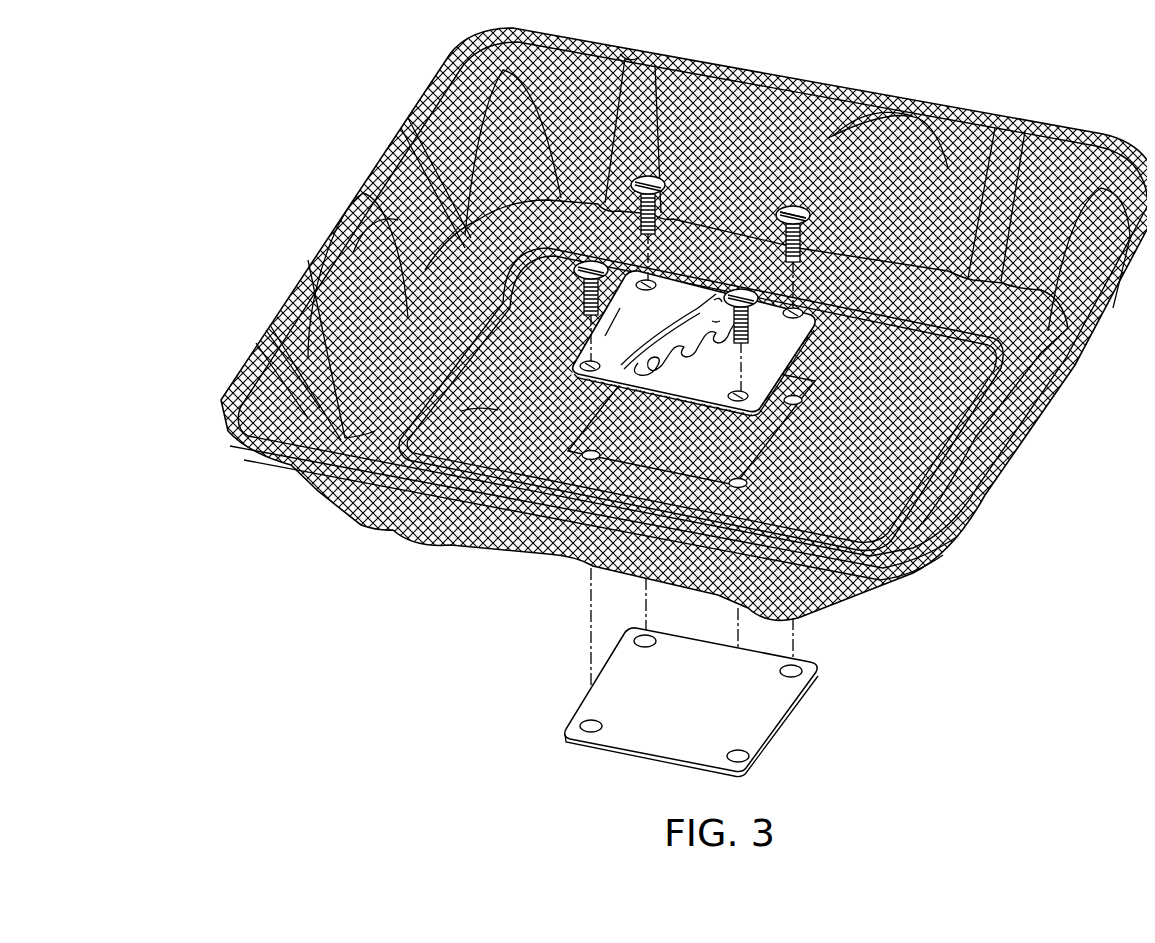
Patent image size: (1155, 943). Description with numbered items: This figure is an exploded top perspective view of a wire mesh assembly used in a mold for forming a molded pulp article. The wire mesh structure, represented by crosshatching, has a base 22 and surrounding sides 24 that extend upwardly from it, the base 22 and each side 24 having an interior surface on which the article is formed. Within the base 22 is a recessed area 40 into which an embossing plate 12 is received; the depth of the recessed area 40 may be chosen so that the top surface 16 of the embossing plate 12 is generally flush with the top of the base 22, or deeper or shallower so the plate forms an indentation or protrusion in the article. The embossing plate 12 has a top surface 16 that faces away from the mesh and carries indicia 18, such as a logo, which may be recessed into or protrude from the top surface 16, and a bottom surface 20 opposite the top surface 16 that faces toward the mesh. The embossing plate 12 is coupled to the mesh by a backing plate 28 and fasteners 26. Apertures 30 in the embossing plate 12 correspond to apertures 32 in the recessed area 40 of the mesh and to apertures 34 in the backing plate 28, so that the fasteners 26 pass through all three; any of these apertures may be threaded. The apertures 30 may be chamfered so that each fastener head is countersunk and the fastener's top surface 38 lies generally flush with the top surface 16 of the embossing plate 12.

The embossing plate 12 is at (812, 341).
The top surface 16 is at (597, 328).
The indicia 18 is at (688, 292).
The bottom surface 20 is at (632, 395).
The base 22 is at (453, 403).
The sides 24 is at (345, 245).
The fasteners 26 is at (798, 242).
The backing plate 28 is at (818, 646).
The apertures of embossing plate 30 is at (797, 305).
The apertures of wire mesh structure 32 is at (745, 478).
The apertures of backing plate 34 is at (728, 744).
The fastener top surface 38 is at (800, 197).
The recessed area 40 is at (750, 440).